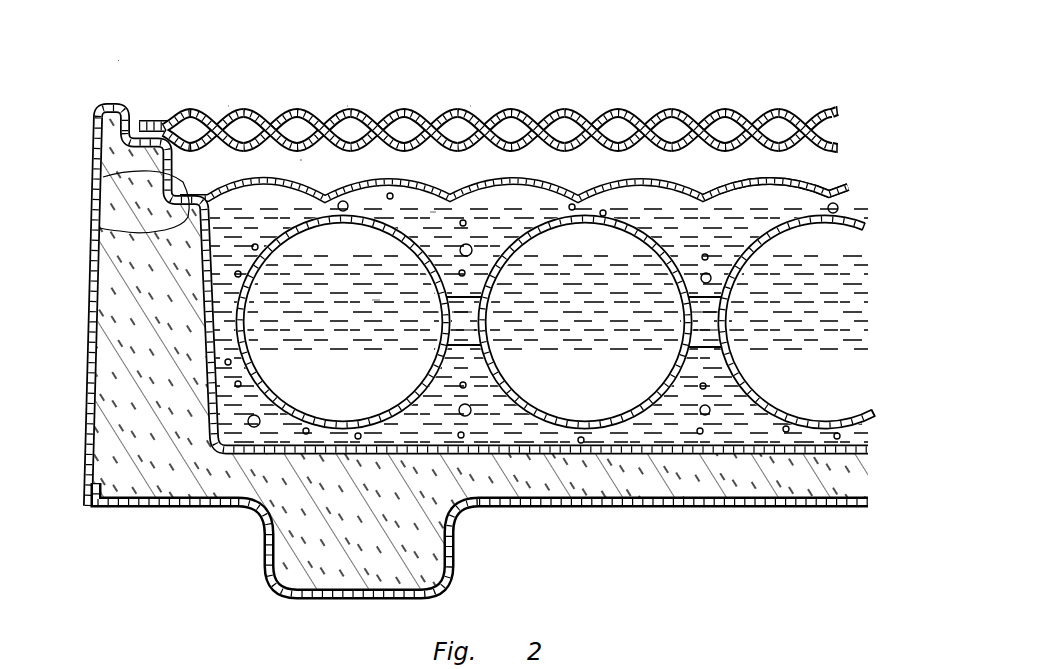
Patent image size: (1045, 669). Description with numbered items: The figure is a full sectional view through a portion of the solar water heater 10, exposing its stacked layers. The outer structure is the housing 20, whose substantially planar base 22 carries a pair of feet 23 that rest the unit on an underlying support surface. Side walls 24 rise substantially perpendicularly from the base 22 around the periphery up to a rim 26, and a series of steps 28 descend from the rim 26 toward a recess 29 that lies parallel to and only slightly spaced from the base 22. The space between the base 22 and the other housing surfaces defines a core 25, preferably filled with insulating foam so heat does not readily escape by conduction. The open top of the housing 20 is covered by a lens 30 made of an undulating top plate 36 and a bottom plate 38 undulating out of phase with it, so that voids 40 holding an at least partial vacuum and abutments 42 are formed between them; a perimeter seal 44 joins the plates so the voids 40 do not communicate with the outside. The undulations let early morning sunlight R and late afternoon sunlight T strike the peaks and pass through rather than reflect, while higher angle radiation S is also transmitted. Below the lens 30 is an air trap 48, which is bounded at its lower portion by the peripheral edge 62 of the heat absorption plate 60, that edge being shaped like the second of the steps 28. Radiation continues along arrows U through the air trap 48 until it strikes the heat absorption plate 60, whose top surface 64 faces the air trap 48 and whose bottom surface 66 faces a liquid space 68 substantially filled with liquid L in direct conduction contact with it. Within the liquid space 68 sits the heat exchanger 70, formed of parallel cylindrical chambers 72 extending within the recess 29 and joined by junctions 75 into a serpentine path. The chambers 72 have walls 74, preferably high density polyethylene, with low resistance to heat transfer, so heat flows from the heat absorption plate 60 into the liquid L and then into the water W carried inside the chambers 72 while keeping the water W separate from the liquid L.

The solar water heater 10 is at (120, 62).
The housing 20 is at (92, 217).
The base 22 is at (158, 508).
The feet 23 is at (453, 532).
The side walls 24 is at (88, 340).
The core 25 is at (165, 369).
The rim 26 is at (109, 104).
The steps 28 is at (102, 148).
The recess 29 is at (257, 448).
The lens 30 is at (768, 90).
The top plate 36 is at (836, 108).
The bottom plate 38 is at (838, 148).
The voids 40 is at (705, 127).
The abutments 42 is at (530, 117).
The perimeter seal 44 is at (150, 120).
The air trap 48 is at (229, 182).
The heat absorption plate 60 is at (849, 189).
The peripheral edge 62 is at (120, 182).
The top surface 64 is at (787, 186).
The bottom surface 66 is at (842, 212).
The liquid space 68 is at (267, 227).
The heat exchanger 70 is at (853, 377).
The chambers 72 is at (343, 386).
The walls 74 is at (300, 222).
The junctions 75 is at (448, 336).
The liquid L is at (441, 236).
The water W is at (389, 344).
The early morning solar radiation R is at (231, 104).
The high angle solar radiation S is at (348, 104).
The late afternoon solar radiation T is at (470, 104).
The transmitted solar radiation U is at (368, 140).